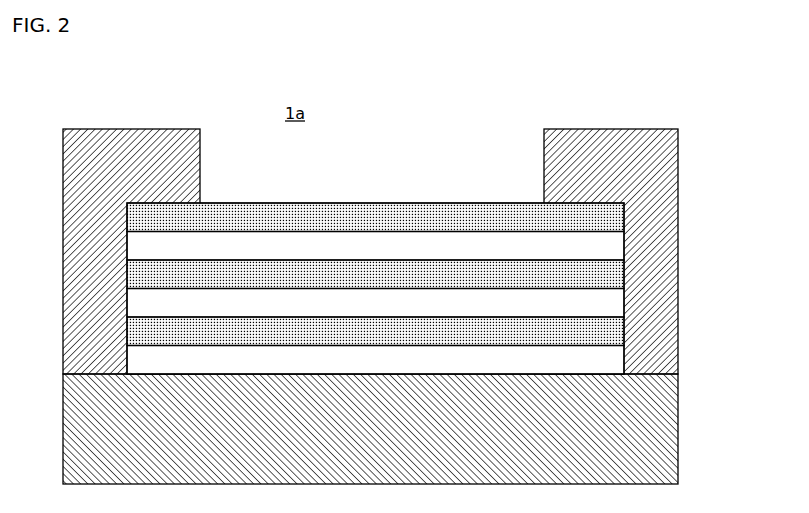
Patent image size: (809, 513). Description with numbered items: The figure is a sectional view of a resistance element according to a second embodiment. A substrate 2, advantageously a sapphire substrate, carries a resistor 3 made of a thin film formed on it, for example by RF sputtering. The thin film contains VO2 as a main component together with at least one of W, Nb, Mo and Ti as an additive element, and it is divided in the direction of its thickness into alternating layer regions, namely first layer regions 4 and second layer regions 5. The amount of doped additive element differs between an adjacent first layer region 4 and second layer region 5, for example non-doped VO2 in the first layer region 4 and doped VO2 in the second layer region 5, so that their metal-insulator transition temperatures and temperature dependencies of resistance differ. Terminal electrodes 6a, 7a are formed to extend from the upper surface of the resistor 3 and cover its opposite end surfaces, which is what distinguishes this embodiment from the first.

The substrate 2 is at (678, 408).
The resistor 3 is at (449, 288).
The first layer region 4 is at (618, 215).
The second layer region 5 is at (618, 244).
The terminal electrode 6a is at (127, 132).
The terminal electrode 7a is at (622, 132).